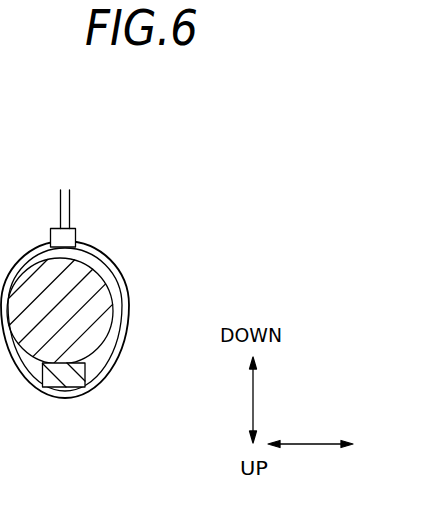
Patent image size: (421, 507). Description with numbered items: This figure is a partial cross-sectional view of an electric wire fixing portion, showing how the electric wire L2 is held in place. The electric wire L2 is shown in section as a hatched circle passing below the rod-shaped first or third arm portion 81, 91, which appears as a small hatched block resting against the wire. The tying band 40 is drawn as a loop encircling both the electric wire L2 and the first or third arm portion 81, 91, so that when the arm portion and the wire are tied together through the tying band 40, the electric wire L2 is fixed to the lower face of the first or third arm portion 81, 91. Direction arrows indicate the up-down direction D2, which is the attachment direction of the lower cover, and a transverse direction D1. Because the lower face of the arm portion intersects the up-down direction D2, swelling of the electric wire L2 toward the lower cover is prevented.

The electric wire L2 is at (119, 272).
The tying band 40 is at (110, 299).
The first arm portion 81 is at (86, 410).
The third arm portion 91 is at (70, 388).
The first direction D1 is at (310, 443).
The up-down direction D2 is at (255, 398).